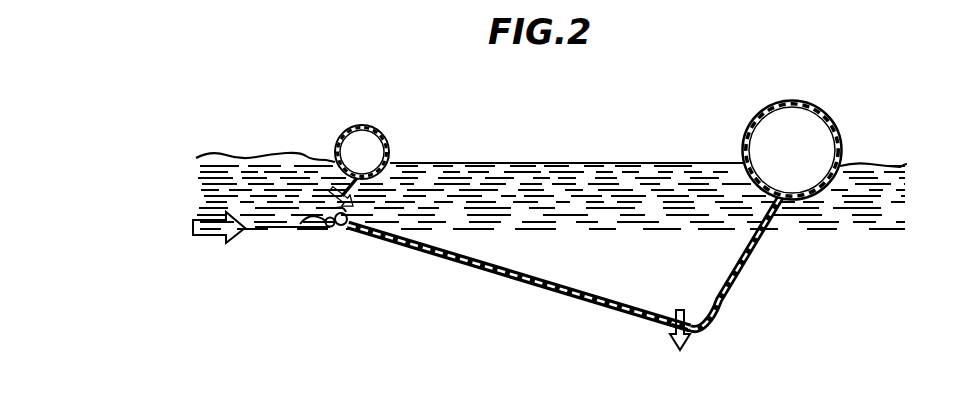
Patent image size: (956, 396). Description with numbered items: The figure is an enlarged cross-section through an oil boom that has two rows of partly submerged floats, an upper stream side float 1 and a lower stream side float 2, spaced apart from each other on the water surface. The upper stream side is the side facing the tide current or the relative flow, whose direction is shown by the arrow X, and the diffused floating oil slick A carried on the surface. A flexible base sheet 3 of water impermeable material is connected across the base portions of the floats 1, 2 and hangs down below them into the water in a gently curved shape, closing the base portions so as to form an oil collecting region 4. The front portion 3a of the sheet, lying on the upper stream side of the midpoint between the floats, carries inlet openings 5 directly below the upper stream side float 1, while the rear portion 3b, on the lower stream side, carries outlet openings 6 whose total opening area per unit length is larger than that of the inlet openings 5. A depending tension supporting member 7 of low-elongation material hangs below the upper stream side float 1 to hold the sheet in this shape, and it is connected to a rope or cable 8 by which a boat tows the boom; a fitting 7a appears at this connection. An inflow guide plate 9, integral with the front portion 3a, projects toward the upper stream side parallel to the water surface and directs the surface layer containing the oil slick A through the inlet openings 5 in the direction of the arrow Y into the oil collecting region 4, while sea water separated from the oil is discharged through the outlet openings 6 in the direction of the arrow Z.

The upper stream side float 1 is at (381, 137).
The lower stream side float 2 is at (759, 120).
The flexible base sheet 3 is at (567, 274).
The front portion of the flexible base sheet 3a is at (443, 258).
The rear portion of the flexible base sheet 3b is at (735, 283).
The oil collecting region 4 is at (507, 163).
The inlet openings 5 is at (322, 167).
The outlet openings 6 is at (668, 327).
The tension supporting member 7 is at (349, 226).
The clamp roller 7a is at (334, 228).
The rope or cable 8 is at (270, 228).
The inflow guide plate 9 is at (318, 229).
The floating oil slick A is at (460, 181).
The direction of tide current flow X is at (219, 238).
The direction of inflow through the inlet openings Y is at (352, 206).
The direction of discharge through the outlet openings Z is at (676, 350).